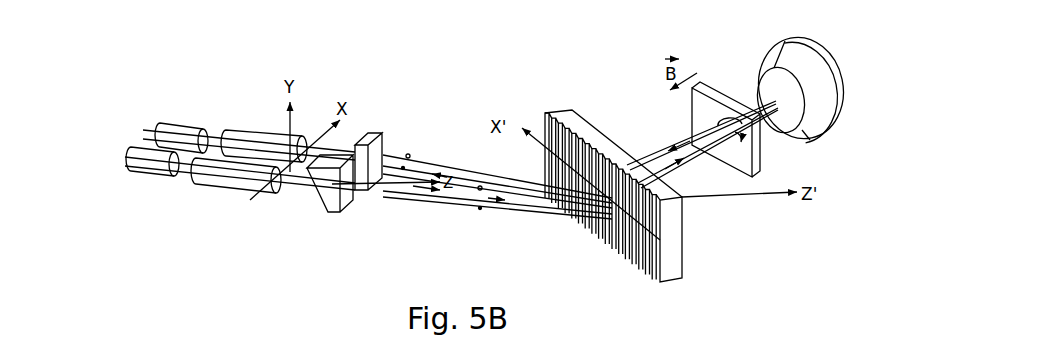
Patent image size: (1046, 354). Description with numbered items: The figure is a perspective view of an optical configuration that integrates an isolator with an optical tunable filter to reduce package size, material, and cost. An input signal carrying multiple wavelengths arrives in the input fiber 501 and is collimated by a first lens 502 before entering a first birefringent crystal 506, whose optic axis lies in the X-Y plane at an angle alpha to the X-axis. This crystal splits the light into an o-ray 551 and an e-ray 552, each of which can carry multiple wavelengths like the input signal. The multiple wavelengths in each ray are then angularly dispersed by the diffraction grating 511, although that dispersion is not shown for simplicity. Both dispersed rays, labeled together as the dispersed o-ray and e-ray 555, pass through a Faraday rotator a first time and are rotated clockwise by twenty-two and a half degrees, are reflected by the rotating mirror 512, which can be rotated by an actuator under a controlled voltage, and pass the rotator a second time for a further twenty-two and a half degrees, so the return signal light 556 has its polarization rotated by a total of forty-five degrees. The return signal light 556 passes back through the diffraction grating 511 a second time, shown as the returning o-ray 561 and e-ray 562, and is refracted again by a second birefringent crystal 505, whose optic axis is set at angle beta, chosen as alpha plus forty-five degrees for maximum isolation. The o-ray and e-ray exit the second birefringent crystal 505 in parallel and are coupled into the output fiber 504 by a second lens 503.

The input fiber 501 is at (150, 167).
The first lens 502 is at (226, 187).
The second lens 503 is at (246, 129).
The output fiber 504 is at (170, 131).
The second birefringent crystal 505 is at (374, 130).
The first birefringent crystal 506 is at (329, 215).
The diffraction grating 511 is at (561, 108).
The rotating mirror 512 is at (757, 79).
The o-ray 551 is at (467, 194).
The e-ray 552 is at (517, 204).
The dispersed o-ray and e-ray 555 is at (691, 163).
The return signal light 556 is at (648, 153).
The o-ray 561 is at (421, 159).
The e-ray 562 is at (457, 176).